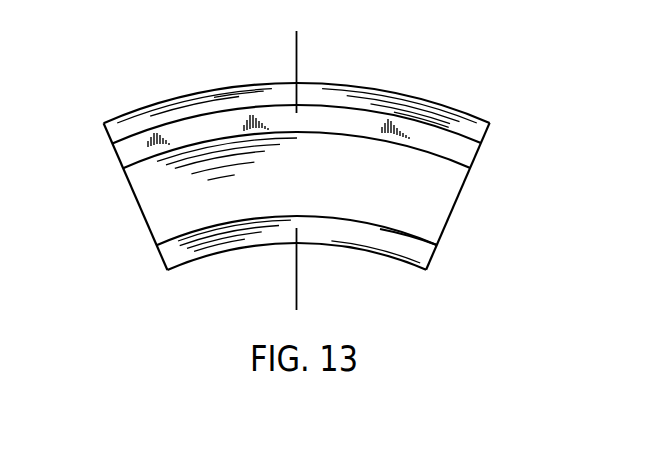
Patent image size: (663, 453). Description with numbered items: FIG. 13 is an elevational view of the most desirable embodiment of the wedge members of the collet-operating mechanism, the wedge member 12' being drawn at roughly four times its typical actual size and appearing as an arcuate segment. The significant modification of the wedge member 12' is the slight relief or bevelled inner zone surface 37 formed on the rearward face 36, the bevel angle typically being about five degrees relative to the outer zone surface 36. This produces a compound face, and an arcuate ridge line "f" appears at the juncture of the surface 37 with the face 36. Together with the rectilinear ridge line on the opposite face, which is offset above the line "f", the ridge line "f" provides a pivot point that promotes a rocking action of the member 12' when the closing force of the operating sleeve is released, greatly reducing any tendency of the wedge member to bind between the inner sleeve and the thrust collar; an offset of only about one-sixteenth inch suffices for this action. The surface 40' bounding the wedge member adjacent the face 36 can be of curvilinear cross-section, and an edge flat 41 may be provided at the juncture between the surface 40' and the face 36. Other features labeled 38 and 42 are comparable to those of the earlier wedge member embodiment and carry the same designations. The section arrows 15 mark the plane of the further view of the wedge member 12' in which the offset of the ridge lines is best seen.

The wedge member 12' is at (344, 196).
The outer layer 38 is at (377, 91).
The surface 40' is at (320, 85).
The edge flat 41 is at (137, 148).
The rearward face 36 is at (184, 203).
The inner layer 42 is at (188, 258).
The bevelled inner zone surface 37 is at (417, 247).
The arcuate ridge line f is at (394, 227).
The section line 15- 15 is at (332, 44).